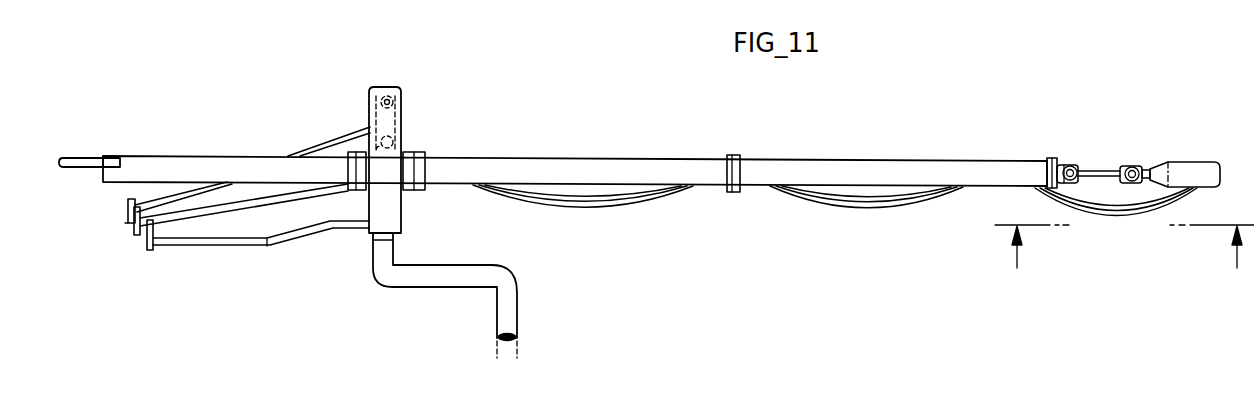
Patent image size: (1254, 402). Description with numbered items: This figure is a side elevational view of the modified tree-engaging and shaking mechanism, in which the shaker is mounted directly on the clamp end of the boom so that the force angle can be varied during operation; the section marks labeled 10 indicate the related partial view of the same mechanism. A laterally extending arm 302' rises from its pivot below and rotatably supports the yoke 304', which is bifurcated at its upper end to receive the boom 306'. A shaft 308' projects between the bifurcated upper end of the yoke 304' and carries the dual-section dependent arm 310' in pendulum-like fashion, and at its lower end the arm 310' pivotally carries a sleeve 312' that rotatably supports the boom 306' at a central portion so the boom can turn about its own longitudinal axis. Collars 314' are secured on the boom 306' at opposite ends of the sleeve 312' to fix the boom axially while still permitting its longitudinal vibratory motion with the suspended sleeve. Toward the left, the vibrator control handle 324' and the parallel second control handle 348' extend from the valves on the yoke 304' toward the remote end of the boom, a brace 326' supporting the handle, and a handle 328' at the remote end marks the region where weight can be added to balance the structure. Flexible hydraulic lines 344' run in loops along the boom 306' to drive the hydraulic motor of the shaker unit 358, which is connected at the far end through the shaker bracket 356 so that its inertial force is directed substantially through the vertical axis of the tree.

The boom 306' is at (575, 157).
The handle 328' is at (94, 140).
The vibrator control handle 324' is at (247, 168).
The second control handle 348' is at (241, 209).
The brace 326' is at (258, 251).
The yoke 304' is at (415, 160).
The dependent arm 310' is at (362, 95).
The shaft 308' is at (421, 91).
The sleeve 312' is at (441, 161).
The collars 314' is at (409, 186).
The laterally extending arm 302' is at (478, 295).
The hydraulic lines 344' is at (835, 207).
The shaker bracket 356 is at (1146, 168).
The shaker unit 358 is at (1212, 179).
The section line 10- 10 is at (1124, 263).